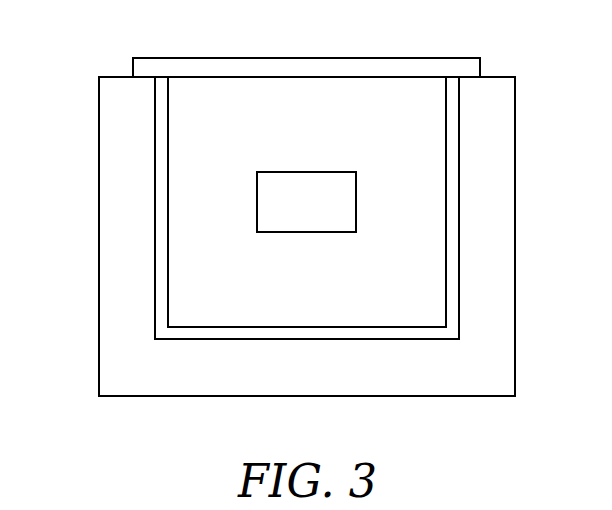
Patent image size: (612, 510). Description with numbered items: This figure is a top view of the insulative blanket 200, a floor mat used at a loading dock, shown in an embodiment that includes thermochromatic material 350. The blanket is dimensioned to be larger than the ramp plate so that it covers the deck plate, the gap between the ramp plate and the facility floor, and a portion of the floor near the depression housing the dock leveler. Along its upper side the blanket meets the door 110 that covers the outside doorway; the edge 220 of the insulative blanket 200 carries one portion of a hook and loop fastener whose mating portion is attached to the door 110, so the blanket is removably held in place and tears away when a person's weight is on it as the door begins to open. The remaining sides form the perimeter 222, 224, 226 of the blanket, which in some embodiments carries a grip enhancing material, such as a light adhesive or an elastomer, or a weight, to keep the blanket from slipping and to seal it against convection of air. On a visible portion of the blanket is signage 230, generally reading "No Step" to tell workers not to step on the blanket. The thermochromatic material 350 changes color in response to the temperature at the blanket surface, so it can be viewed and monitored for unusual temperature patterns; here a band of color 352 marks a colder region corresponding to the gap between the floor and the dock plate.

The door 110 is at (383, 65).
The insulative blanket 200 is at (458, 201).
The edge of the insulative blanket 220 is at (245, 76).
The perimeter 222 is at (99, 256).
The perimeter 224 is at (290, 396).
The perimeter 226 is at (515, 255).
The signage 230 is at (330, 214).
The thermochromatic material 350 is at (108, 166).
The band of color 352 is at (450, 309).